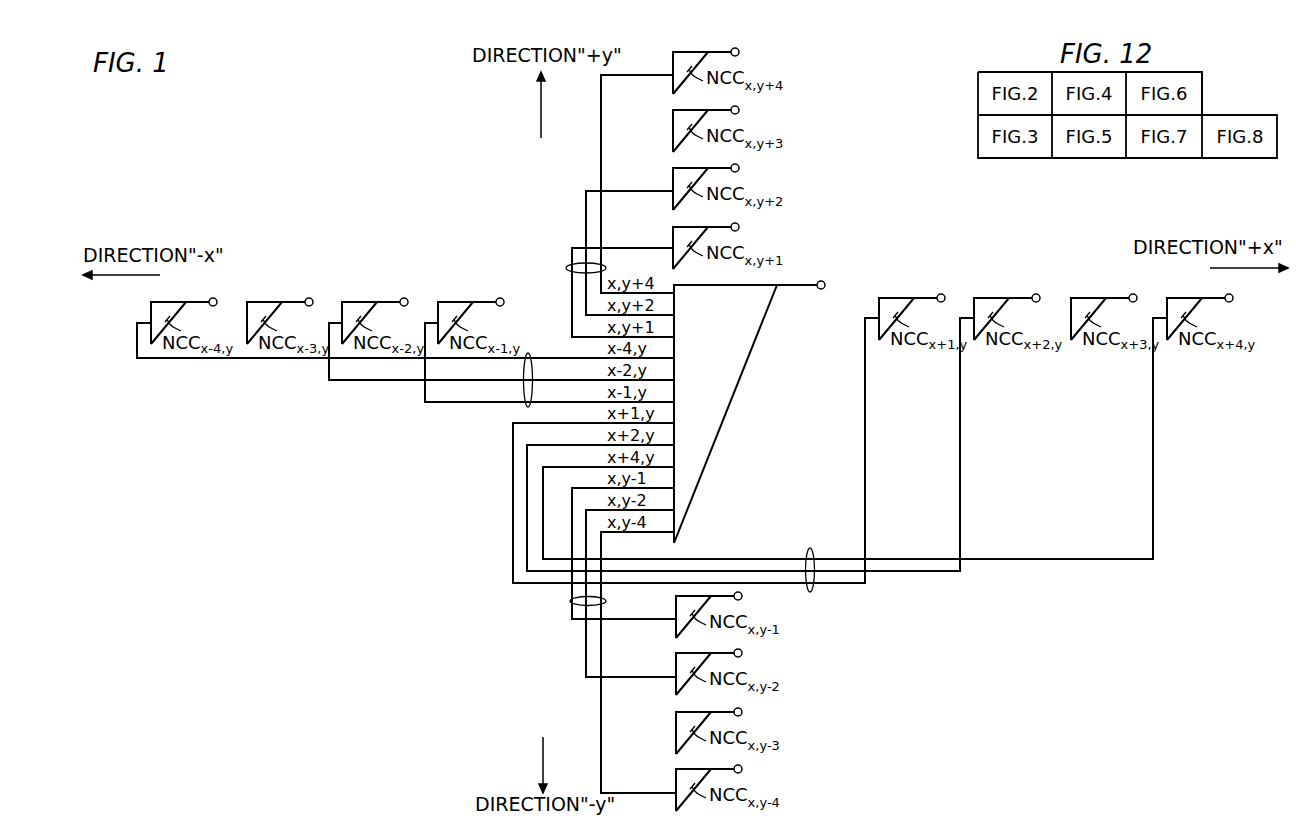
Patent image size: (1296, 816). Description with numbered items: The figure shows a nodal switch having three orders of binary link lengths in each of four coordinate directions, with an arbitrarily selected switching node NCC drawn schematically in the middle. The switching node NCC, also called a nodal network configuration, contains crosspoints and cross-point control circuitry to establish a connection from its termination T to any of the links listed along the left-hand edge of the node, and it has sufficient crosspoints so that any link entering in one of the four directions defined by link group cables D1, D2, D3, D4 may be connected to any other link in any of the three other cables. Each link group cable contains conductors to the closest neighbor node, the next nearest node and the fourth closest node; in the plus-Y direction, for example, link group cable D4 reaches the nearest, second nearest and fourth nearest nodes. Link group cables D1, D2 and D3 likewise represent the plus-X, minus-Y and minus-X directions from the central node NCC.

The link group cable D1 is at (812, 545).
The link group cable D2 is at (570, 601).
The link group cable D3 is at (528, 354).
The link group cable D4 is at (567, 268).
The switching node NCC is at (730, 402).
The termination T is at (825, 272).